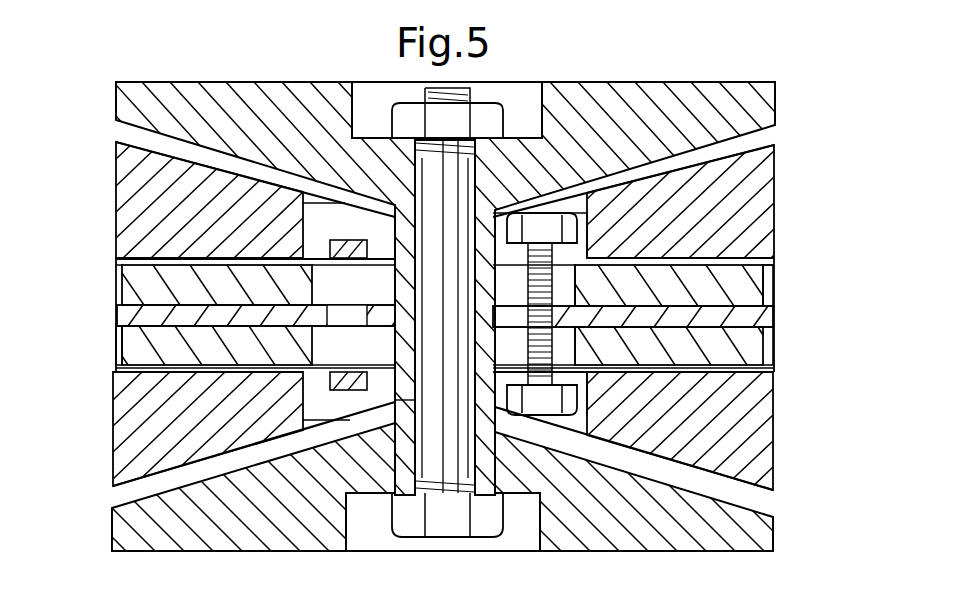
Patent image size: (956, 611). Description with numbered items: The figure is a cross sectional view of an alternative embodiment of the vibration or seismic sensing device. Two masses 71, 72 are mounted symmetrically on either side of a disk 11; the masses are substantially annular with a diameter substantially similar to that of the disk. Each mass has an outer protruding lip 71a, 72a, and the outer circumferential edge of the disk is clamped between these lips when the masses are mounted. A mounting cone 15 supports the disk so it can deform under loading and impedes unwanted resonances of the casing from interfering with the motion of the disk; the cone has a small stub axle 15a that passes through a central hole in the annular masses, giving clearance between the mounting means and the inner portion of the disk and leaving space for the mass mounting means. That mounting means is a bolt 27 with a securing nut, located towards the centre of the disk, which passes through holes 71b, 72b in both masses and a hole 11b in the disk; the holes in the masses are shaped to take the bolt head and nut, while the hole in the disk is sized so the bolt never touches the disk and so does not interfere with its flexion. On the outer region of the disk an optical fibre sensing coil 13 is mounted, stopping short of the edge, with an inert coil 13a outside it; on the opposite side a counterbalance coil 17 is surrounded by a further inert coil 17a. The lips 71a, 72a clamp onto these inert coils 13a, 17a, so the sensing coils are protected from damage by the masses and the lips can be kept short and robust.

The disk 11 is at (777, 318).
The hole in the disk 11b is at (340, 314).
The optical fibre sensing coil 13 is at (747, 283).
The inert coil 13a is at (777, 293).
The mounting cone 15 is at (133, 540).
The stub axle 15a is at (405, 420).
The counterbalance coil 17 is at (116, 352).
The inert coil 17a is at (112, 343).
The bolt 27 is at (566, 230).
The mass 71 is at (753, 185).
The outer protruding lip 71a is at (112, 258).
The hole in the mass 71b is at (320, 228).
The mass 72 is at (777, 465).
The outer protruding lip 72a is at (777, 377).
The hole in the mass 72b is at (322, 412).